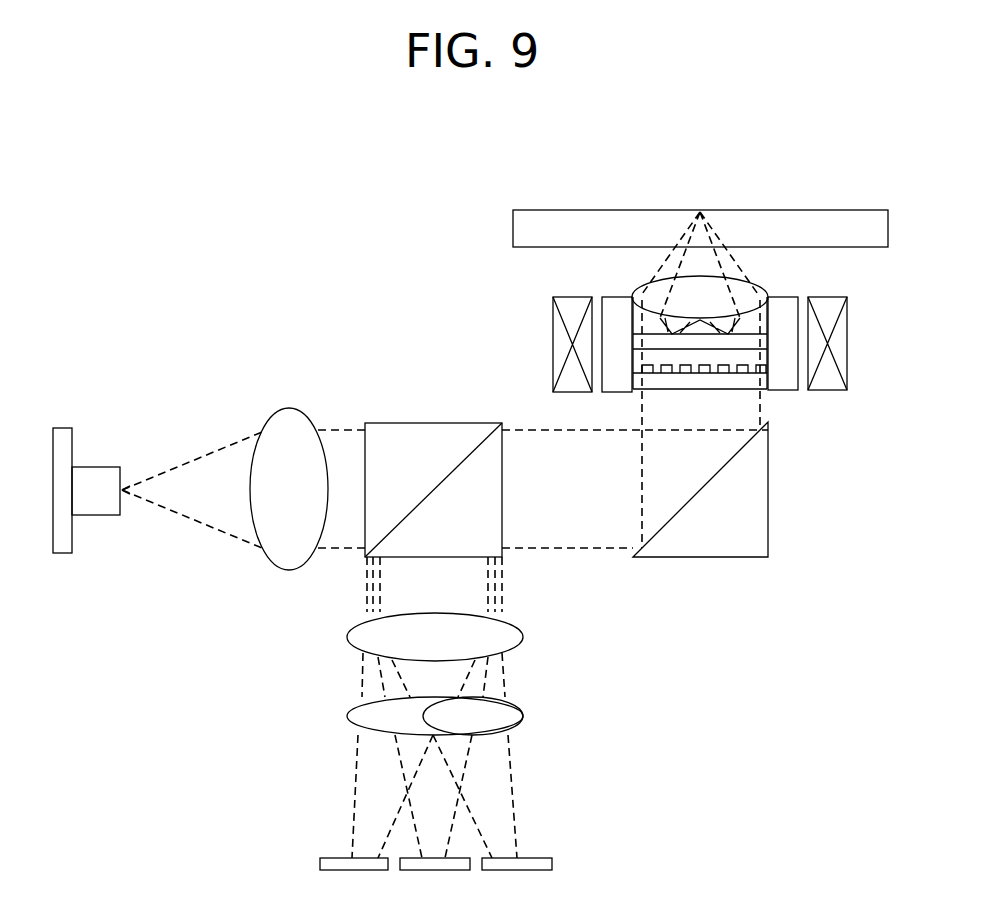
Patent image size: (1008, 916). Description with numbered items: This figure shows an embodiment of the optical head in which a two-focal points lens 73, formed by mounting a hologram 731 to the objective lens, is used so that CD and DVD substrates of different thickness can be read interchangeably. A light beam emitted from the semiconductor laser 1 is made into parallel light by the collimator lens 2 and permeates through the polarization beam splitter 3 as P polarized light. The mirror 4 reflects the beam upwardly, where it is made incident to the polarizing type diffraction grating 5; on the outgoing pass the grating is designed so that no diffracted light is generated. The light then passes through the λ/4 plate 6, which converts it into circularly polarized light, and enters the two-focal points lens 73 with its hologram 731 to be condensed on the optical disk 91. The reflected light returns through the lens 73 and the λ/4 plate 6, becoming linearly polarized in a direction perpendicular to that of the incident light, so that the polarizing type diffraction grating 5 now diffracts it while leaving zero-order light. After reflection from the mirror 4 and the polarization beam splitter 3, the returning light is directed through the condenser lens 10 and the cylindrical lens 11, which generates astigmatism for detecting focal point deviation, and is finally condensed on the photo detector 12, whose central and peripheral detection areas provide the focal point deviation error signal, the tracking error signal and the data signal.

The semiconductor laser 1 is at (94, 465).
The collimator lens 2 is at (285, 408).
The polarization beam splitter 3 is at (375, 422).
The mirror 4 is at (770, 527).
The polarizing type diffraction grating 5 is at (753, 378).
The λ/4 plate 6 is at (752, 341).
The condenser lens 10 is at (523, 633).
The cylindrical lens 11 is at (523, 716).
The photo detector 12 is at (553, 863).
The two-focal points lens 73 is at (716, 298).
The hologram 731 is at (731, 318).
The optical disk 91 is at (537, 210).